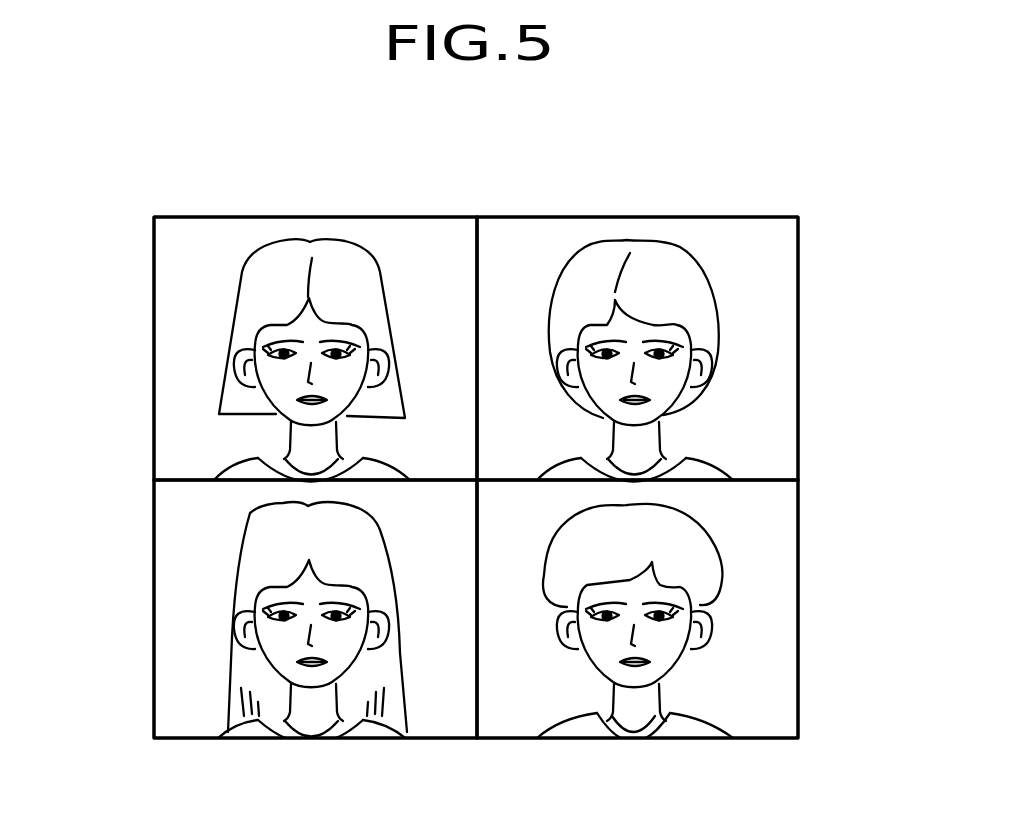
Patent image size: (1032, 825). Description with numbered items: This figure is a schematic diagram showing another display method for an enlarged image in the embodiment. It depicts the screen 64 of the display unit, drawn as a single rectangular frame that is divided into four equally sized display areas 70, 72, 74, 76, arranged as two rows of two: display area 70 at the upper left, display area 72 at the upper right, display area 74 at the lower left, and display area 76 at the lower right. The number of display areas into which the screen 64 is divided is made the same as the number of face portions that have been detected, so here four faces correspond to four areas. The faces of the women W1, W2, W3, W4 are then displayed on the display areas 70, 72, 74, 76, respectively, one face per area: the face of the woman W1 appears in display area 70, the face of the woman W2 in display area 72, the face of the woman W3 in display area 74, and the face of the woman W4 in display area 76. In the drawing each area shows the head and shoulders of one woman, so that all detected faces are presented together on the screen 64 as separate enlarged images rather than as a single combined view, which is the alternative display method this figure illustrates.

The screen 64 is at (745, 216).
The woman W1 is at (176, 266).
The woman W2 is at (777, 267).
The woman W3 is at (176, 528).
The woman W4 is at (777, 529).
The display area 70 is at (175, 352).
The display area 72 is at (775, 351).
The display area 74 is at (175, 613).
The display area 76 is at (775, 612).